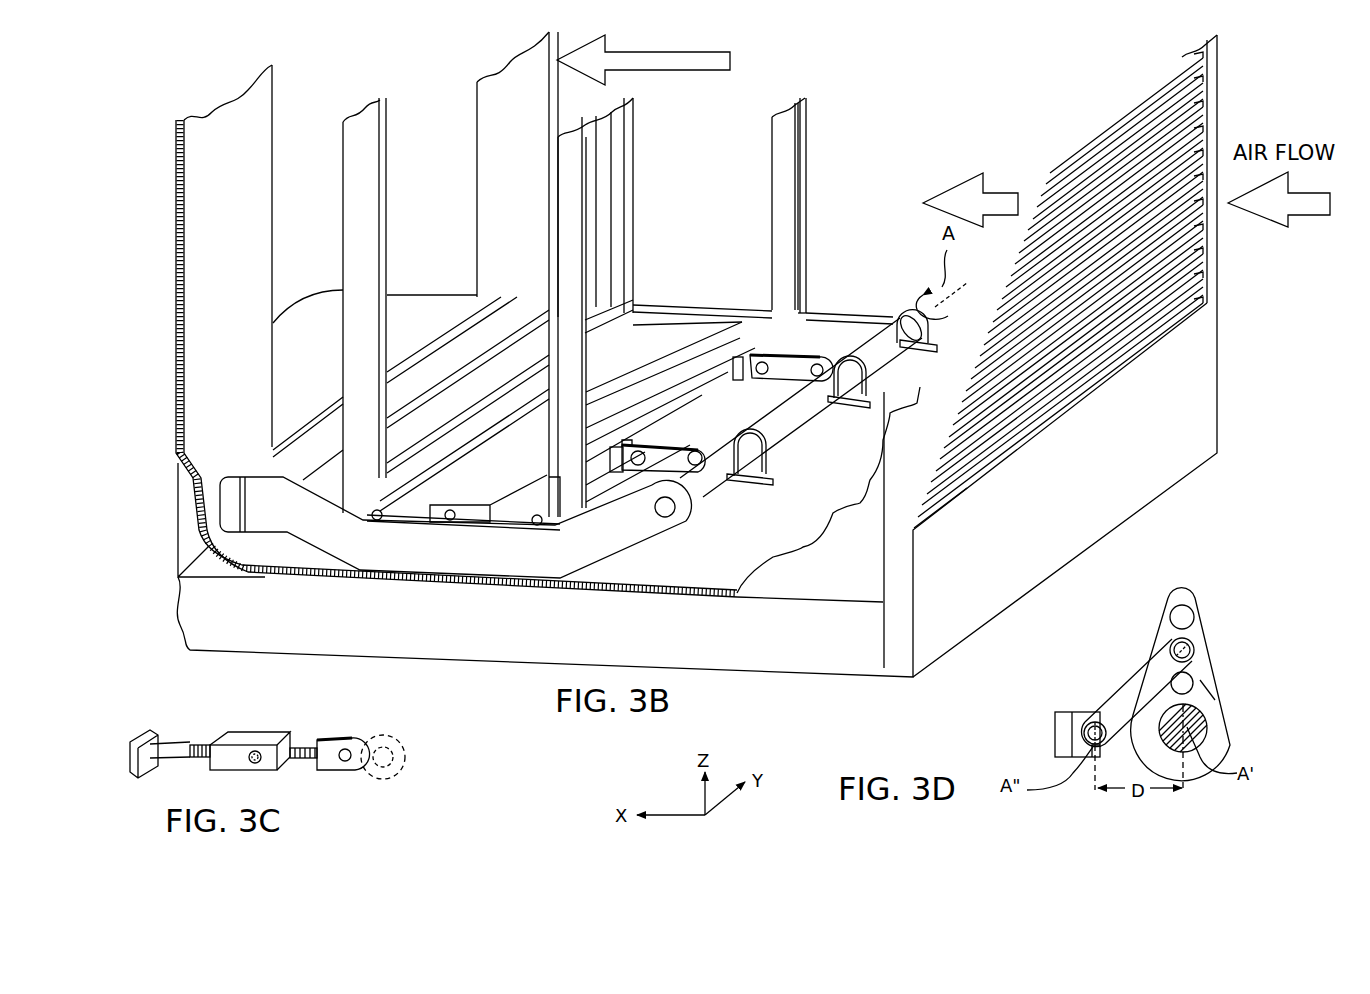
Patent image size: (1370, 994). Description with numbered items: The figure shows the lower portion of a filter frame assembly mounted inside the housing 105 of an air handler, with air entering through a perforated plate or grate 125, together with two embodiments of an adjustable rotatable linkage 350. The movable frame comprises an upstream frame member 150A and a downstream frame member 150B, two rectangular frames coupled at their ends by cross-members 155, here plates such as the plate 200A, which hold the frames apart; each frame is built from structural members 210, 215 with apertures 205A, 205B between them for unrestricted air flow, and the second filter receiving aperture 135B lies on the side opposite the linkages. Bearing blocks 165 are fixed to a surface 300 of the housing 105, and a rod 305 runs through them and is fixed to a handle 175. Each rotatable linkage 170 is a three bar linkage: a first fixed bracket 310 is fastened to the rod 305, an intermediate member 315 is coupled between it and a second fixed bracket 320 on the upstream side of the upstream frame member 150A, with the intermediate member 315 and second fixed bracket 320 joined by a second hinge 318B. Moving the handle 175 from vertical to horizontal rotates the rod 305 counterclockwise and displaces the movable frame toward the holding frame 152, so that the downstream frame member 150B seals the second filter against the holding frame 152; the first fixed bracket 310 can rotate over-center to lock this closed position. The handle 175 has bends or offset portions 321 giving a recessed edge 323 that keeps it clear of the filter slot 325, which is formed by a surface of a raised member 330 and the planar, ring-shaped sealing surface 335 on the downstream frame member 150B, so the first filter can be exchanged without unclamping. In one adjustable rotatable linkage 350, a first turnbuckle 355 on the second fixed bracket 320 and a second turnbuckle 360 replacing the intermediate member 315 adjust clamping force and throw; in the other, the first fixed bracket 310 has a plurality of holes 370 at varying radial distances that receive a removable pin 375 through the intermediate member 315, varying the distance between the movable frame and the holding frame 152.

In FIG. 3B, the housing 105 is at (1083, 497).
In FIG. 3B, the perforated plate or grate 125 is at (1210, 100).
In FIG. 3B, the second filter receiving aperture 135B is at (493, 367).
In FIG. 3B, the upstream frame member 150A is at (812, 140).
In FIG. 3B, the downstream frame member 150B is at (342, 176).
In FIG. 3B, the holding frame 152 is at (268, 275).
In FIG. 3B, the cross-members 155 is at (485, 527).
In FIG. 3B, the bearing blocks 165 is at (837, 410).
In FIG. 3B, the rotatable linkage 170 is at (799, 312).
In FIG. 3B, the handle 175 is at (253, 473).
In FIG. 3B, the plate 200A is at (652, 318).
In FIG. 3B, the aperture 205A is at (727, 210).
In FIG. 3B, the aperture 205B is at (585, 135).
In FIG. 3B, the structural member 210 is at (357, 240).
In FIG. 3B, the structural member 215 is at (473, 397).
In FIG. 3B, the surface of the housing 300 is at (754, 556).
In FIG. 3B, the rod 305 is at (803, 410).
In FIG. 3D, the rod 305 is at (1205, 728).
In FIG. 3B, the first fixed bracket 310 is at (844, 335).
In FIG. 3C, the first fixed bracket 310 is at (392, 735).
In FIG. 3D, the first fixed bracket 310 is at (1212, 668).
In FIG. 3B, the intermediate member 315 is at (790, 372).
In FIG. 3C, the intermediate member 315 is at (310, 737).
In FIG. 3D, the intermediate member 315 is at (1110, 693).
In FIG. 3D, the second hinge 318B is at (1088, 718).
In FIG. 3B, the second fixed bracket 320 is at (737, 355).
In FIG. 3C, the second fixed bracket 320 is at (140, 735).
In FIG. 3D, the second fixed bracket 320 is at (1052, 735).
In FIG. 3B, the bends or offset portions 321 is at (398, 525).
In FIG. 3B, the recessed edge 323 is at (452, 530).
In FIG. 3B, the filter slot 325 is at (413, 503).
In FIG. 3B, the raised member 330 is at (478, 294).
In FIG. 3B, the sealing surface 335 is at (383, 197).
In FIG. 3C, the adjustable rotatable linkage 350 is at (248, 727).
In FIG. 3D, the adjustable rotatable linkage 350 is at (1218, 608).
In FIG. 3C, the first turnbuckle 355 is at (186, 764).
In FIG. 3C, the second turnbuckle 360 is at (290, 767).
In FIG. 3D, the holes 370 is at (1170, 615).
In FIG. 3D, the removable pin 375 is at (1197, 643).